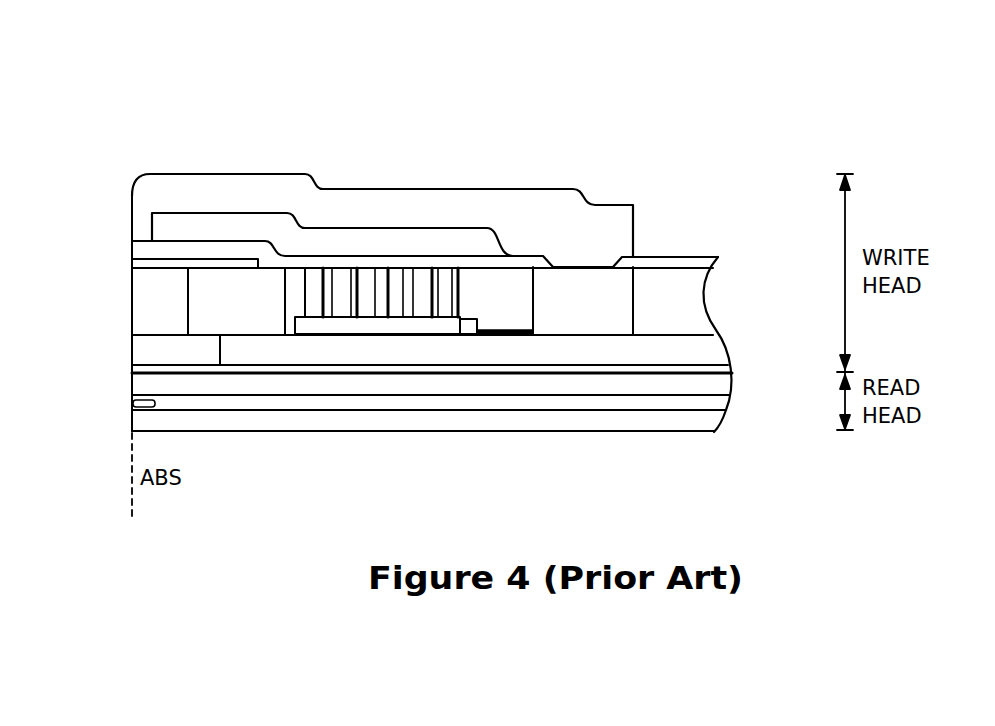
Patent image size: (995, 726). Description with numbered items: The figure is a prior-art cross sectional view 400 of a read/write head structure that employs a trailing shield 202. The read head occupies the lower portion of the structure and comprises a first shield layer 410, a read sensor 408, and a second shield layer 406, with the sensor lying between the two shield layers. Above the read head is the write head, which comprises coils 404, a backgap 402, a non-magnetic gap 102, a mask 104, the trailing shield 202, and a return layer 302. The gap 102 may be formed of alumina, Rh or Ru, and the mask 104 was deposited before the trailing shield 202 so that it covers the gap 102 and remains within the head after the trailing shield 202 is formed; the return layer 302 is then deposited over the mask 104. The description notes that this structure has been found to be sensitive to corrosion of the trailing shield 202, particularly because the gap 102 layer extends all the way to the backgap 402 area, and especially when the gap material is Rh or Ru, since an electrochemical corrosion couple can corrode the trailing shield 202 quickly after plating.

The cross sectional view 400 is at (392, 249).
The return layer 302 is at (249, 174).
The trailing shield 202 is at (130, 227).
The mask layer 104 is at (420, 243).
The non-magnetic gap layer 102 is at (527, 263).
The backgap 402 is at (601, 314).
The coils 404 is at (305, 296).
The second shield layer 406 is at (130, 388).
The read sensor 408 is at (130, 408).
The first shield layer 410 is at (130, 425).